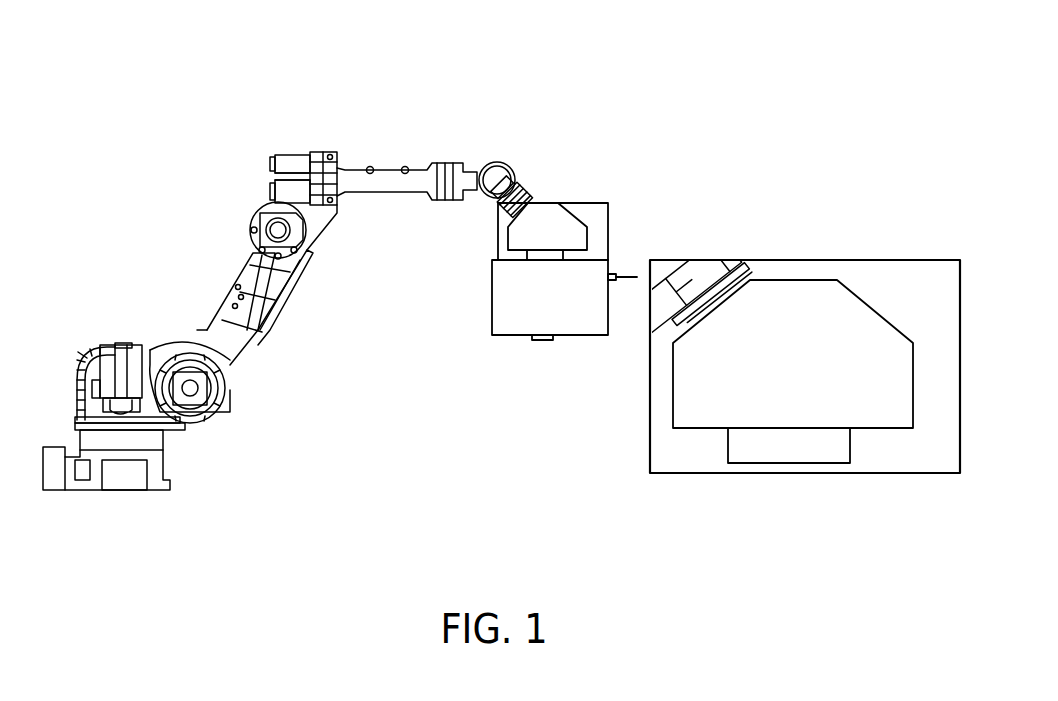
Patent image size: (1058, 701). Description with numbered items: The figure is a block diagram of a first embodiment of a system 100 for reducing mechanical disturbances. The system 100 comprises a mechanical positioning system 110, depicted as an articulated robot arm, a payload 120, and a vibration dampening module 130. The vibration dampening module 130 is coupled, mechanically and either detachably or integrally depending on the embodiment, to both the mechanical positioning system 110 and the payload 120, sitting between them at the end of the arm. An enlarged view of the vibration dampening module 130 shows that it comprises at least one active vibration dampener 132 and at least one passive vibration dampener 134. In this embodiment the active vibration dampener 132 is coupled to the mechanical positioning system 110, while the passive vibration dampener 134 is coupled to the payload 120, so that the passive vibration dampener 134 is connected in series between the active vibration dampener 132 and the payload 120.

The system 100 is at (255, 44).
The mechanical positioning system 110 is at (388, 172).
The payload 120 is at (508, 337).
The vibration dampening module 130 is at (608, 223).
The active vibration dampener 132 is at (697, 428).
The passive vibration dampener 134 is at (792, 463).